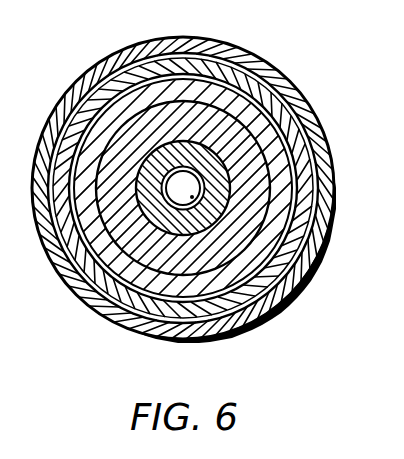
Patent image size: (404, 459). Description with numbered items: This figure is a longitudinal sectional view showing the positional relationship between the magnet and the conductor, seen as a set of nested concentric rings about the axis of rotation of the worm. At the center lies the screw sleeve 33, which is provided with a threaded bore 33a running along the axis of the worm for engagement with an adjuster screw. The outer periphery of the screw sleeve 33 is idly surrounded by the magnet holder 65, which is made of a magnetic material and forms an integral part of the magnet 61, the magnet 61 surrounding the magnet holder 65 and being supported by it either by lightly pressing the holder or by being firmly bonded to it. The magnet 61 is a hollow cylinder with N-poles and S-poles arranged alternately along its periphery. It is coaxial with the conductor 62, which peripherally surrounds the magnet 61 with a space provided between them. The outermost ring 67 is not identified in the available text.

The outer jacket 67 is at (82, 84).
The conductor 62 is at (253, 82).
The magnet 61 is at (105, 246).
The magnet holder 65 is at (240, 160).
The screw sleeve 33 is at (193, 198).
The threaded bore 33a is at (214, 210).